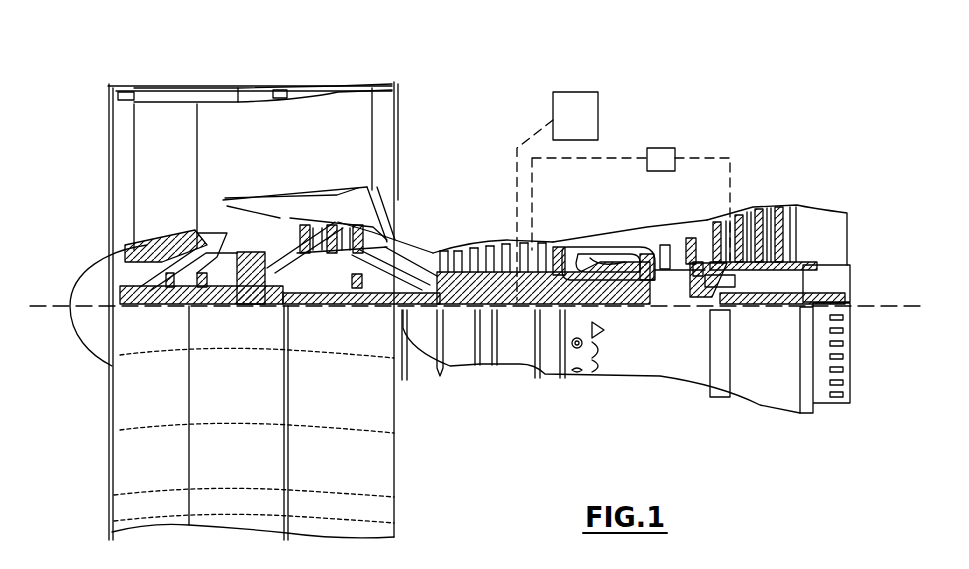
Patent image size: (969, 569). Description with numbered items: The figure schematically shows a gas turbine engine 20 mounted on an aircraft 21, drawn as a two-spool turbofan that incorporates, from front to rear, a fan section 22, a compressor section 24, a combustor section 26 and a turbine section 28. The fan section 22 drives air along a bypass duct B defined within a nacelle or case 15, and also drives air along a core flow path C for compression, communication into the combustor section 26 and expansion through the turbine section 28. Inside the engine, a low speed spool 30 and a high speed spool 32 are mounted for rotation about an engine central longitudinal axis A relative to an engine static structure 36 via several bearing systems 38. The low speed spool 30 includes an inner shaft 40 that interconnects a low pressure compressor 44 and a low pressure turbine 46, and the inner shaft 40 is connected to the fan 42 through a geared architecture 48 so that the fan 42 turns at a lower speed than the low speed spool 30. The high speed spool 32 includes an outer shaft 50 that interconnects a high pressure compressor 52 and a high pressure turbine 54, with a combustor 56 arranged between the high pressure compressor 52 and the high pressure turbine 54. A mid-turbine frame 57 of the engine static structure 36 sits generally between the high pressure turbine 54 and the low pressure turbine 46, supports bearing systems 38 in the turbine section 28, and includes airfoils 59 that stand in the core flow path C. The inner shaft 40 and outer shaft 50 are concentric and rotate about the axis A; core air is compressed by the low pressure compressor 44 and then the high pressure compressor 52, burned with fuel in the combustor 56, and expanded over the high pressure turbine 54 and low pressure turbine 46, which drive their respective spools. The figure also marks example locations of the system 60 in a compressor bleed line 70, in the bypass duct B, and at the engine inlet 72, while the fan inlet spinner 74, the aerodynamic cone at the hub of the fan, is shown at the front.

The gas turbine engine 20 is at (740, 124).
The nacelle or case 15 is at (255, 90).
The aircraft 21 is at (570, 92).
The fan section 22 is at (200, 79).
The compressor section 24 is at (434, 232).
The combustor section 26 is at (608, 226).
The turbine section 28 is at (746, 185).
The low speed spool 30 is at (518, 325).
The high speed spool 32 is at (550, 268).
The engine static structure 36 is at (549, 378).
The bearing systems 38 is at (357, 293).
The inner shaft 40 is at (407, 334).
The fan 42 is at (176, 188).
The low pressure compressor 44 is at (335, 235).
The low pressure turbine 46 is at (754, 210).
The geared architecture 48 is at (257, 294).
The outer shaft 50 is at (606, 284).
The high pressure compressor 52 is at (500, 244).
The high pressure turbine 54 is at (690, 236).
The combustor 56 is at (607, 262).
The mid-turbine frame 57 is at (698, 230).
The airfoils 59 is at (699, 262).
The system 60 is at (123, 86).
The compressor bleed line 70 is at (607, 157).
The engine inlet 72 is at (106, 121).
The fan inlet spinner 74 is at (77, 262).
The engine central longitudinal axis A is at (919, 306).
The bypass duct B is at (225, 145).
The core flow path C is at (254, 222).